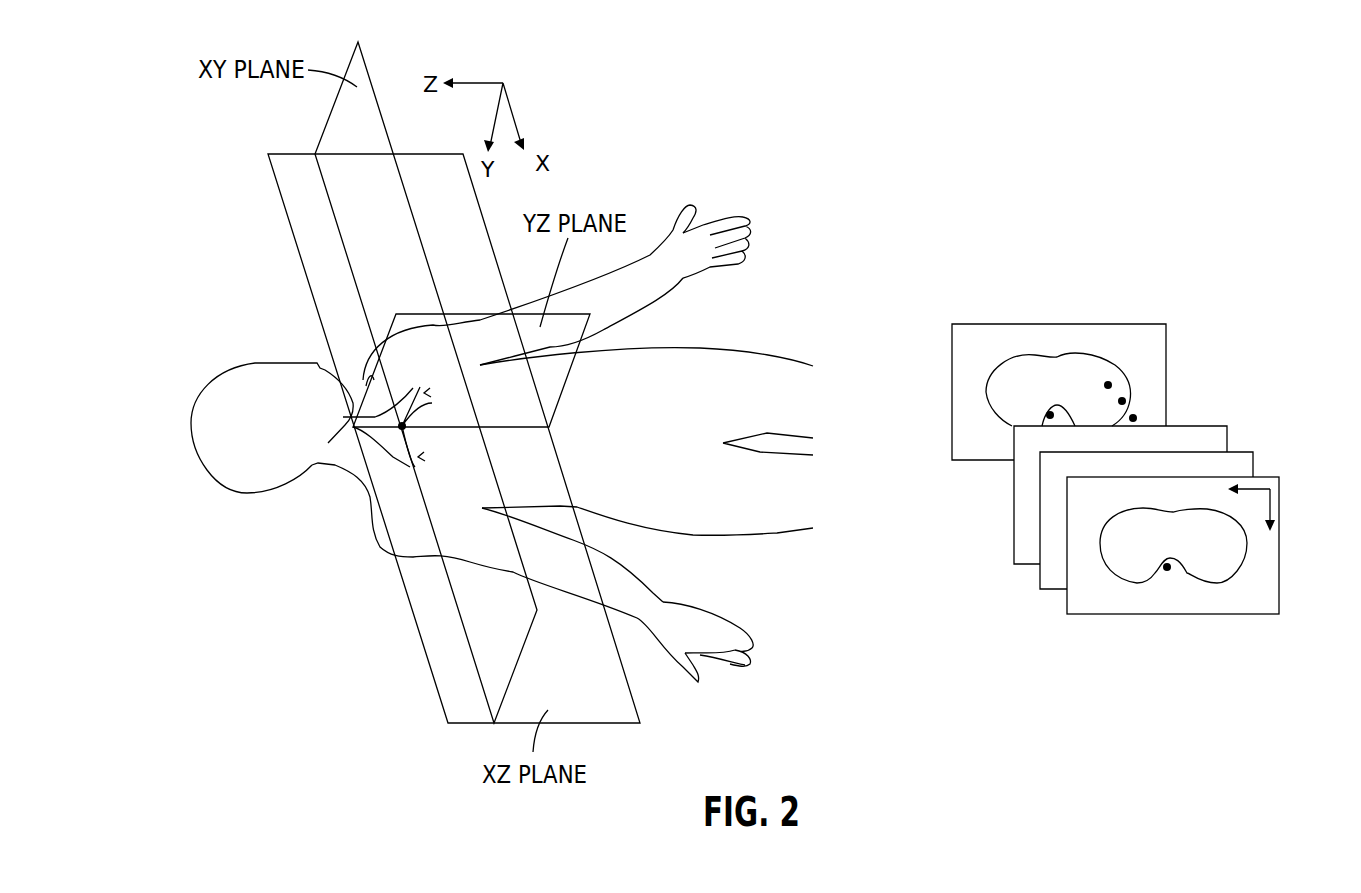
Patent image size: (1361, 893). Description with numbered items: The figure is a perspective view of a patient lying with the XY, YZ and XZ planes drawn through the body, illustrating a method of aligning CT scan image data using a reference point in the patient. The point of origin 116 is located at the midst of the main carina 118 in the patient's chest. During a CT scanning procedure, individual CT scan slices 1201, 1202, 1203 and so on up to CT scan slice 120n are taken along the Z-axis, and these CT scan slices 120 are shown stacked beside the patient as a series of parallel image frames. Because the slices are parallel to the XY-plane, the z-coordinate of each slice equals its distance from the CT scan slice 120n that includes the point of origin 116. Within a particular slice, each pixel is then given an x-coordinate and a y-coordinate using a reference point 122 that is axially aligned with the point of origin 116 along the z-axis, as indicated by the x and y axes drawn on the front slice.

The point of origin 116 is at (402, 426).
The main carina 118 is at (369, 395).
The CT scan slices 120 is at (1256, 346).
The CT scan slice n 120n is at (1150, 323).
The CT scan slice 1 1201 is at (1272, 476).
The CT scan slice 2 1202 is at (1242, 452).
The CT scan slice 3 1203 is at (1208, 425).
The reference point 122 is at (1167, 570).